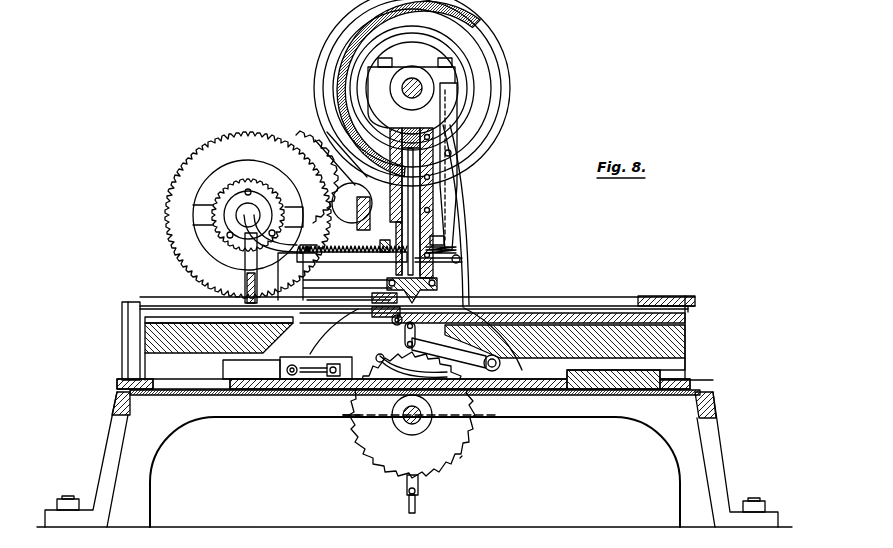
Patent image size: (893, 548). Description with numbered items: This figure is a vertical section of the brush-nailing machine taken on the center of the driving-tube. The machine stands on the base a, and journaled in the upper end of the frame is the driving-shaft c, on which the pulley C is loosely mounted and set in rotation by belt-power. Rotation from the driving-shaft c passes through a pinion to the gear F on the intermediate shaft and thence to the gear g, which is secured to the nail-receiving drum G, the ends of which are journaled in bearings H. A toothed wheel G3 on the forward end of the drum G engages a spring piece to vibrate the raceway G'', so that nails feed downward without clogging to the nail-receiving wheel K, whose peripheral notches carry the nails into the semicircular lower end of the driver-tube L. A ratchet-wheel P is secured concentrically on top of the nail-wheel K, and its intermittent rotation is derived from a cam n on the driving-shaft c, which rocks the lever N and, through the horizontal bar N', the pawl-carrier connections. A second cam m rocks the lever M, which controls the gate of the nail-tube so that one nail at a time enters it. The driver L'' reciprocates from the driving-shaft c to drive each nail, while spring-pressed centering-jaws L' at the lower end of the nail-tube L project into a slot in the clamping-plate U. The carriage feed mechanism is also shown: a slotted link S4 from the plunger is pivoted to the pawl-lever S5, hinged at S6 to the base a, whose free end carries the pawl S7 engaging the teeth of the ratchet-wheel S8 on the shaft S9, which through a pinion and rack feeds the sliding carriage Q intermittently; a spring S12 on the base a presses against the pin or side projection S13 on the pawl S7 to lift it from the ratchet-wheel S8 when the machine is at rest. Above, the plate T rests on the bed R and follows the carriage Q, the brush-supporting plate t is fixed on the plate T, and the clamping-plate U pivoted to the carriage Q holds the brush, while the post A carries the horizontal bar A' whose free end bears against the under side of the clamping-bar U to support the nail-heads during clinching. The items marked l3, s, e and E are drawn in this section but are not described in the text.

The base a is at (268, 395).
The post A is at (387, 303).
The horizontal metal bar A' is at (146, 329).
The pulley C is at (412, 93).
The driving-shaft c is at (440, 82).
The cam n is at (414, 93).
The cam m is at (387, 75).
The lever N is at (489, 166).
The horizontal bar N' is at (390, 240).
The gear F is at (312, 131).
The gear g is at (192, 160).
The nail-receiving drum G is at (248, 210).
The toothed wheel G3 is at (259, 183).
The raceway G'' is at (260, 250).
The bearings H is at (318, 268).
The ratchet-wheel P is at (352, 244).
The nail-receiving wheel K is at (407, 281).
The driver-tube L is at (450, 264).
The centering-jaws L' is at (411, 290).
The driver L'' is at (452, 203).
The lever M is at (453, 230).
The spring l3 is at (455, 257).
The bed R is at (415, 190).
The plate T is at (688, 320).
The brush-supporting plate t is at (689, 312).
The clamping plate U is at (688, 294).
The carriage Q is at (662, 386).
The slotted link S4 is at (416, 337).
The pawl-lever S5 is at (445, 352).
The hinge S6 is at (501, 364).
The pawl S7 is at (398, 350).
The ratchet-wheel S8 is at (420, 415).
The shaft S9 is at (408, 420).
The spring S12 is at (365, 400).
The pin or side projection S13 is at (416, 339).
The ratchet tooth s is at (462, 456).
The pendant link e is at (419, 490).
The pin E is at (416, 509).